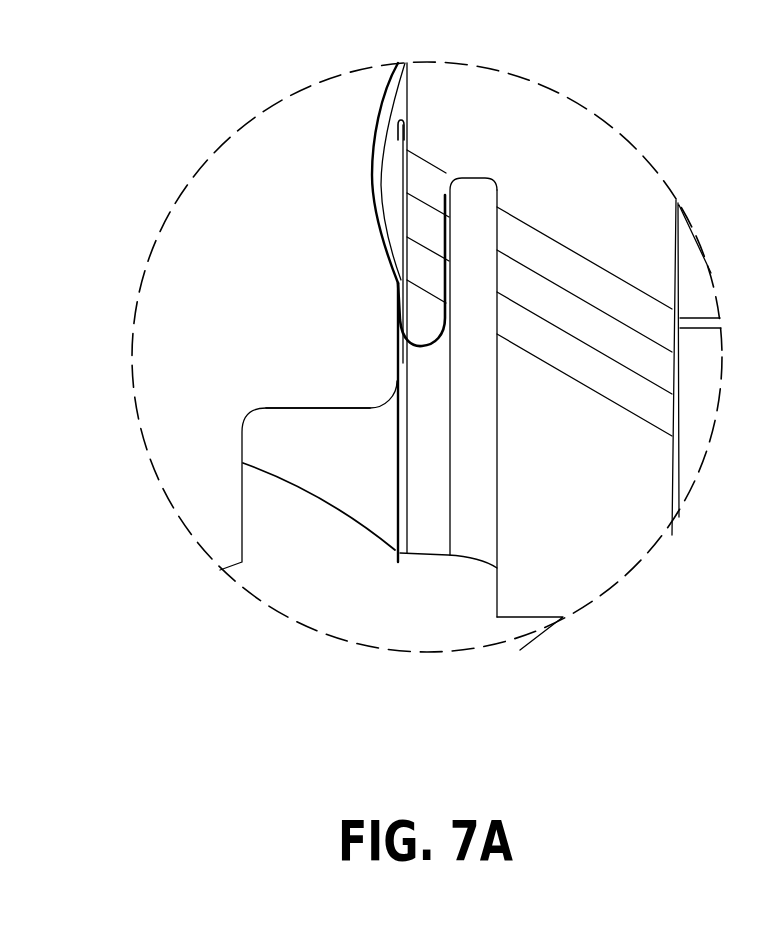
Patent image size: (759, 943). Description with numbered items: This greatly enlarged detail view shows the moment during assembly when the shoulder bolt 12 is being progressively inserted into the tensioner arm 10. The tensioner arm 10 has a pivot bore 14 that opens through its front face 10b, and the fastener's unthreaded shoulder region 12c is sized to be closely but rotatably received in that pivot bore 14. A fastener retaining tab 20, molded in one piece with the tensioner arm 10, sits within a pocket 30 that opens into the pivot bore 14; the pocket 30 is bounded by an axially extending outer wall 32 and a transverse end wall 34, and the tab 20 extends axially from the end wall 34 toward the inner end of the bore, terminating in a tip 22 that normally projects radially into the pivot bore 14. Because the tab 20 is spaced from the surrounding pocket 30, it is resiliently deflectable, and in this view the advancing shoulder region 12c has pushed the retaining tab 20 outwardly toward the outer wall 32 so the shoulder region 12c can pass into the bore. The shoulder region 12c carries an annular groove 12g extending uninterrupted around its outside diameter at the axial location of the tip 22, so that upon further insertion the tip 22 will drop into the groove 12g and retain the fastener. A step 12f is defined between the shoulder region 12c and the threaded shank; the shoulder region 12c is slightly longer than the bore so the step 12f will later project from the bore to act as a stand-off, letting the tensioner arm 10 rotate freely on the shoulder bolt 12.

The tensioner arm 10 is at (567, 156).
The front face 10b is at (518, 623).
The shoulder bolt 12 is at (237, 193).
The shoulder region 12c is at (393, 356).
The step 12f is at (287, 410).
The annular groove 12g is at (375, 130).
The pivot bore 14 is at (353, 493).
The fastener retaining tab 20 is at (415, 322).
The tip 22 is at (397, 320).
The pocket 30 is at (470, 540).
The outer wall 32 is at (478, 422).
The end wall 34 is at (471, 178).